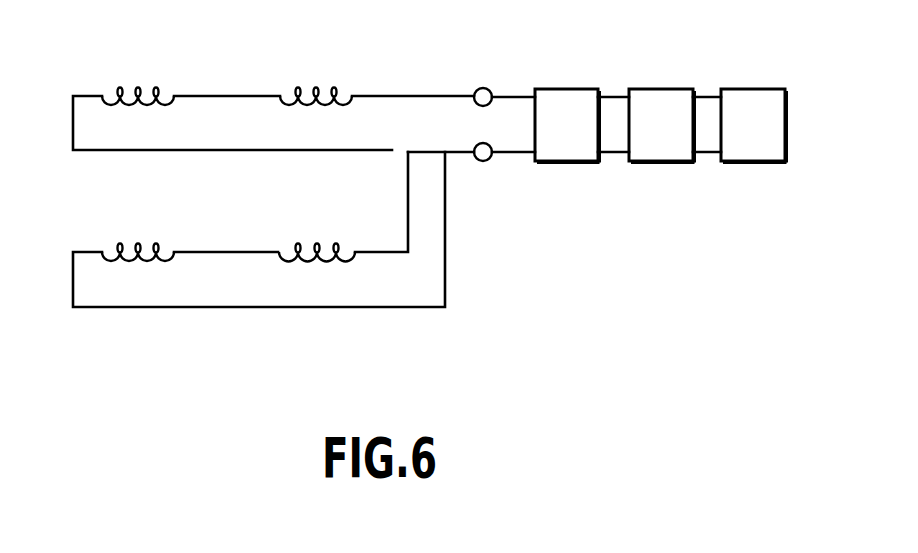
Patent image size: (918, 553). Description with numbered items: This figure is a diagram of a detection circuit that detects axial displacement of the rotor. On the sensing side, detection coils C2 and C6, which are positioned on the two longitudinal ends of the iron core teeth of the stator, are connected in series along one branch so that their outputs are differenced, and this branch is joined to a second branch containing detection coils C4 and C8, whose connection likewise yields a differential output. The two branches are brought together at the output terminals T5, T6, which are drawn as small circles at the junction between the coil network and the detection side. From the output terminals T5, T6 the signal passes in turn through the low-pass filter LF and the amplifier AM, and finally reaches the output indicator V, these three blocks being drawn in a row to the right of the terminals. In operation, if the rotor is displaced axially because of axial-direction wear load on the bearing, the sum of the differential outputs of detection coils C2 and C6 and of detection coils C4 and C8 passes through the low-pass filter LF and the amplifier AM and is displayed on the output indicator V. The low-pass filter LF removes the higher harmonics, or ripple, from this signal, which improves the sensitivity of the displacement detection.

The detection coil C2 is at (138, 90).
The detection coil C6 is at (320, 92).
The detection coil C4 is at (138, 247).
The detection coil C8 is at (320, 247).
The output terminal T5 is at (485, 88).
The output terminal T6 is at (483, 161).
The low-pass filter LF is at (567, 126).
The amplifier AM is at (662, 126).
The output indicator V is at (754, 126).